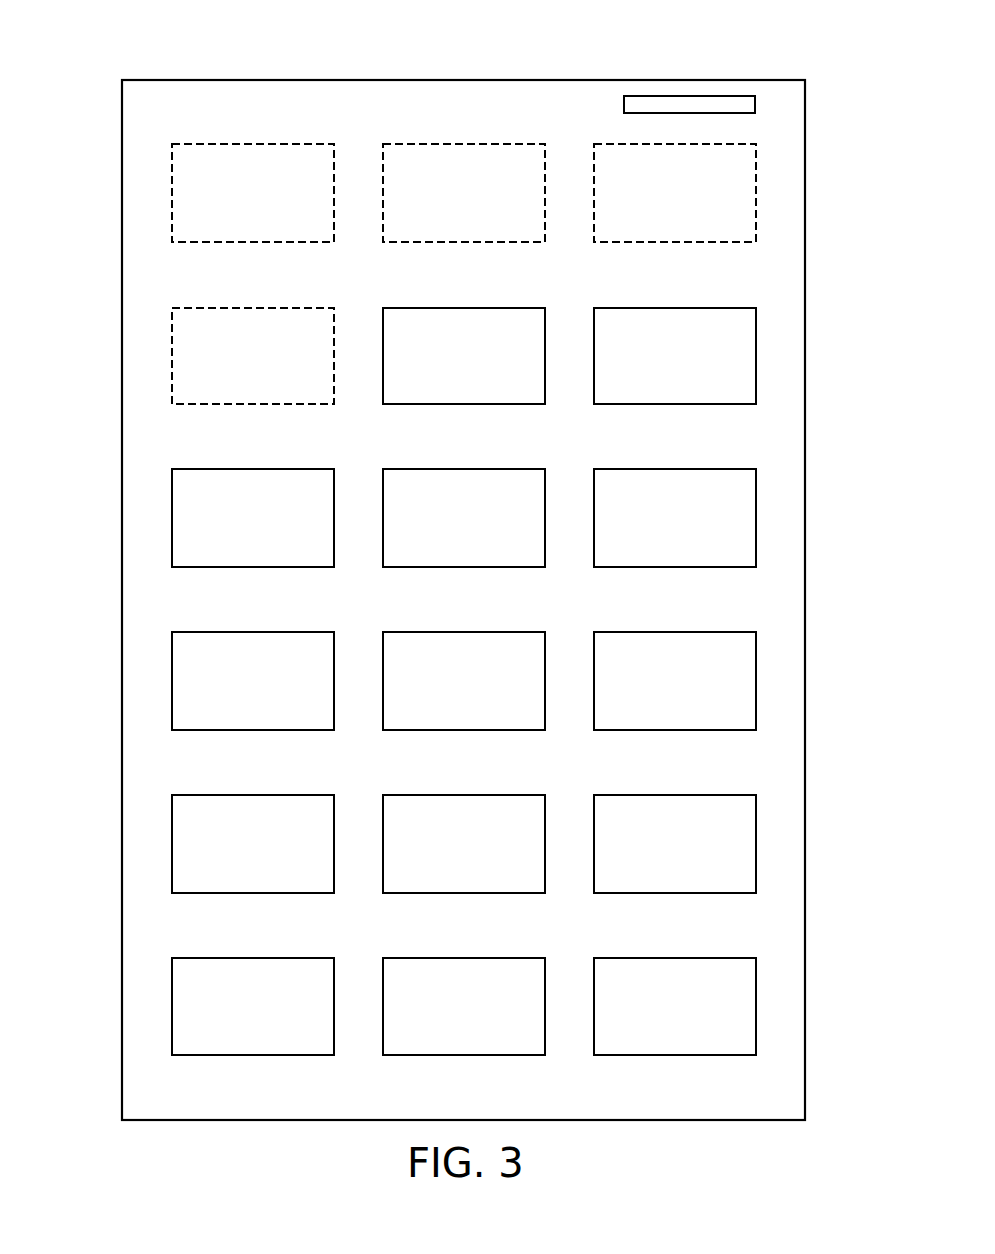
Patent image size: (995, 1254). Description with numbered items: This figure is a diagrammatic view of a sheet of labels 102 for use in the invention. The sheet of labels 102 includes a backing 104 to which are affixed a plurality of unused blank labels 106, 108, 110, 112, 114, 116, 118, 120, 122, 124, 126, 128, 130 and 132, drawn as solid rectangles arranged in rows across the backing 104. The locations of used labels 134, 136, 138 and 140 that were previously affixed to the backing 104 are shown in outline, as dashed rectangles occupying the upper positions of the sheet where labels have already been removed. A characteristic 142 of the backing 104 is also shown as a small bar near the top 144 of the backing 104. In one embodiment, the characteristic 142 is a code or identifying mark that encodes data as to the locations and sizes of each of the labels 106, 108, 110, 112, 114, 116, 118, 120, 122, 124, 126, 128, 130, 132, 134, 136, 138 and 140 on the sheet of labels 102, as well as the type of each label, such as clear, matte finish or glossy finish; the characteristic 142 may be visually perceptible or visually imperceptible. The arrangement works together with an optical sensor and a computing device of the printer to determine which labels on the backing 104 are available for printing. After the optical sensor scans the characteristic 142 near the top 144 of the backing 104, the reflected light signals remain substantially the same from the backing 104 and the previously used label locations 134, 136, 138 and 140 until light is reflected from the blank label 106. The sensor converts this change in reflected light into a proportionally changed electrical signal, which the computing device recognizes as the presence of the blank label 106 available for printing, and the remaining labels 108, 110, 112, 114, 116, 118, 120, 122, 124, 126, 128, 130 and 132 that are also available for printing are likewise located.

The sheet of labels 102 is at (115, 70).
The backing 104 is at (782, 530).
The unused blank label 106 is at (463, 318).
The unused blank label 108 is at (713, 318).
The unused blank label 110 is at (291, 478).
The unused blank label 112 is at (502, 478).
The unused blank label 114 is at (711, 478).
The unused blank label 116 is at (292, 640).
The unused blank label 118 is at (503, 640).
The unused blank label 120 is at (713, 645).
The unused blank label 122 is at (292, 805).
The unused blank label 124 is at (503, 805).
The unused blank label 126 is at (713, 805).
The unused blank label 128 is at (292, 968).
The unused blank label 130 is at (507, 968).
The unused blank label 132 is at (713, 968).
The used label location 134 is at (291, 153).
The used label location 136 is at (502, 153).
The used label location 138 is at (713, 162).
The used label location 140 is at (291, 318).
The characteristic 142 is at (715, 102).
The top 144 is at (233, 79).